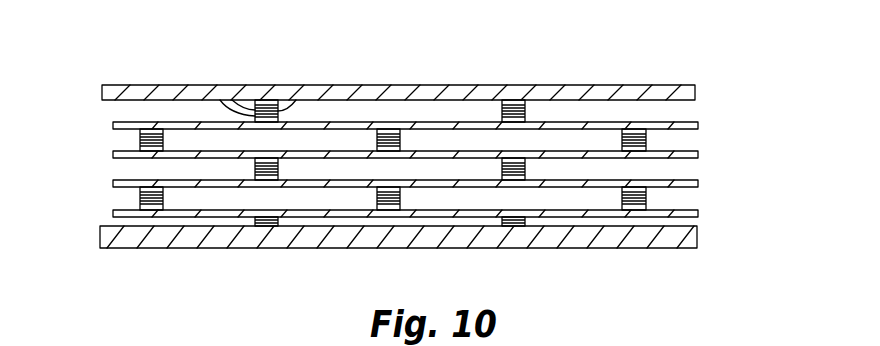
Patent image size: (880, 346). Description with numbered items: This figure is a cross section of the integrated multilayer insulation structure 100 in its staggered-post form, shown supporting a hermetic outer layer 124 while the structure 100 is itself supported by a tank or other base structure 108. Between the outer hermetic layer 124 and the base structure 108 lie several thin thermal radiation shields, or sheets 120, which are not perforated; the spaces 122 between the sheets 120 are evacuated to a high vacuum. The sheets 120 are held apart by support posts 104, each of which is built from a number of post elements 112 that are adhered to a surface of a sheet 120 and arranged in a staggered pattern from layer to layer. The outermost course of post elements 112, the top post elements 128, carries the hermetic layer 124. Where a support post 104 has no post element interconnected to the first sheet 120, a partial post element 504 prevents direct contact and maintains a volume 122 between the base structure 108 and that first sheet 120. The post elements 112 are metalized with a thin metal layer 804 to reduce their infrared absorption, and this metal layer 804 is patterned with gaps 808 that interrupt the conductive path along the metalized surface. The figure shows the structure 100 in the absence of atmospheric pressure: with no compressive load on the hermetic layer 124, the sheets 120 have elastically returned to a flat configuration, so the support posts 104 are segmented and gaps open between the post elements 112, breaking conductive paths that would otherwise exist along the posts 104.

The integrated multilayer insulation (IMLI) structure 100 is at (742, 85).
The support post 104 is at (268, 88).
The base structure or layer 108 is at (288, 237).
The post element 112 is at (166, 140).
The thermal radiation shield (sheet) 120 is at (113, 155).
The space or separation 122 is at (337, 107).
The hermetic outer layer 124 is at (688, 85).
The top post element 128 is at (502, 110).
The partial post element 504 is at (264, 222).
The metal layer 804 is at (256, 121).
The gap in metal layer 808 is at (278, 120).